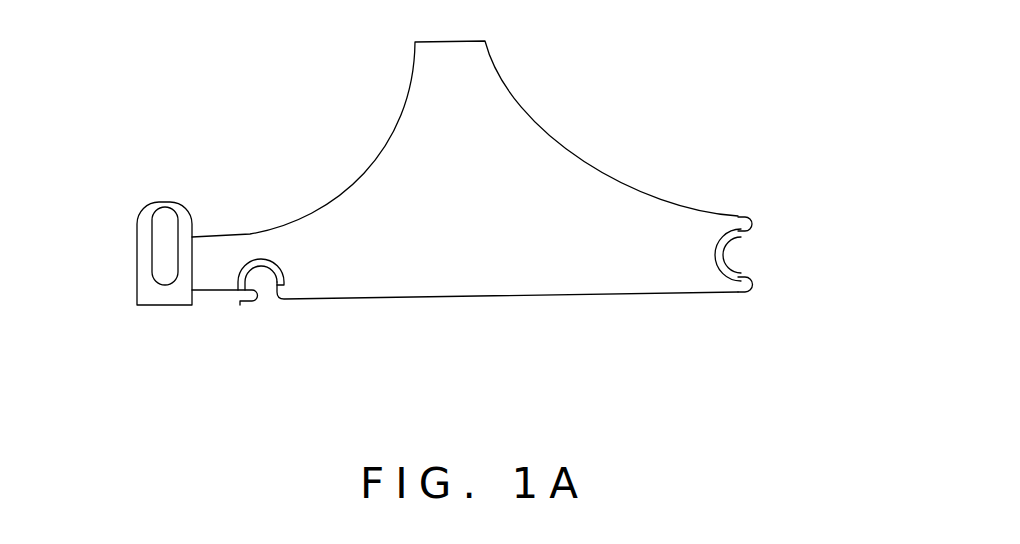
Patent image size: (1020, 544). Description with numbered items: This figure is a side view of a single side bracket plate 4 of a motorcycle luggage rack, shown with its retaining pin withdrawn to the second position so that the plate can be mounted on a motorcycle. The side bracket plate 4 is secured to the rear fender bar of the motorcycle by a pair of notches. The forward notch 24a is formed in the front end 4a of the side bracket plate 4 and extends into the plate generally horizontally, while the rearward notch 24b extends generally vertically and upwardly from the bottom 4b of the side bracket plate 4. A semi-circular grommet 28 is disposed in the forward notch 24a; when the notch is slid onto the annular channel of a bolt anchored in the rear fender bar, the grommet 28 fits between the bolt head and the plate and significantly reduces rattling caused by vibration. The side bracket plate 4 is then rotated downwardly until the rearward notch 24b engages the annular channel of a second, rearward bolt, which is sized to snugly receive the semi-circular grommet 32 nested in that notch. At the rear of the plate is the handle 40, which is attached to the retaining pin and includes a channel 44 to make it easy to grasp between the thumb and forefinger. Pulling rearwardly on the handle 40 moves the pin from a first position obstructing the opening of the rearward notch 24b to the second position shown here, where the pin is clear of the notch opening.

The side bracket plate 4 is at (503, 358).
The front end of the side bracket plate 4a is at (743, 283).
The bottom of the side bracket plate 4b is at (327, 300).
The forward notch 24a is at (739, 237).
The rearward notch 24b is at (275, 289).
The semi-circular grommet 28 is at (735, 232).
The semi-circular grommet 32 is at (256, 258).
The handle 40 is at (145, 296).
The channel 44 is at (157, 232).